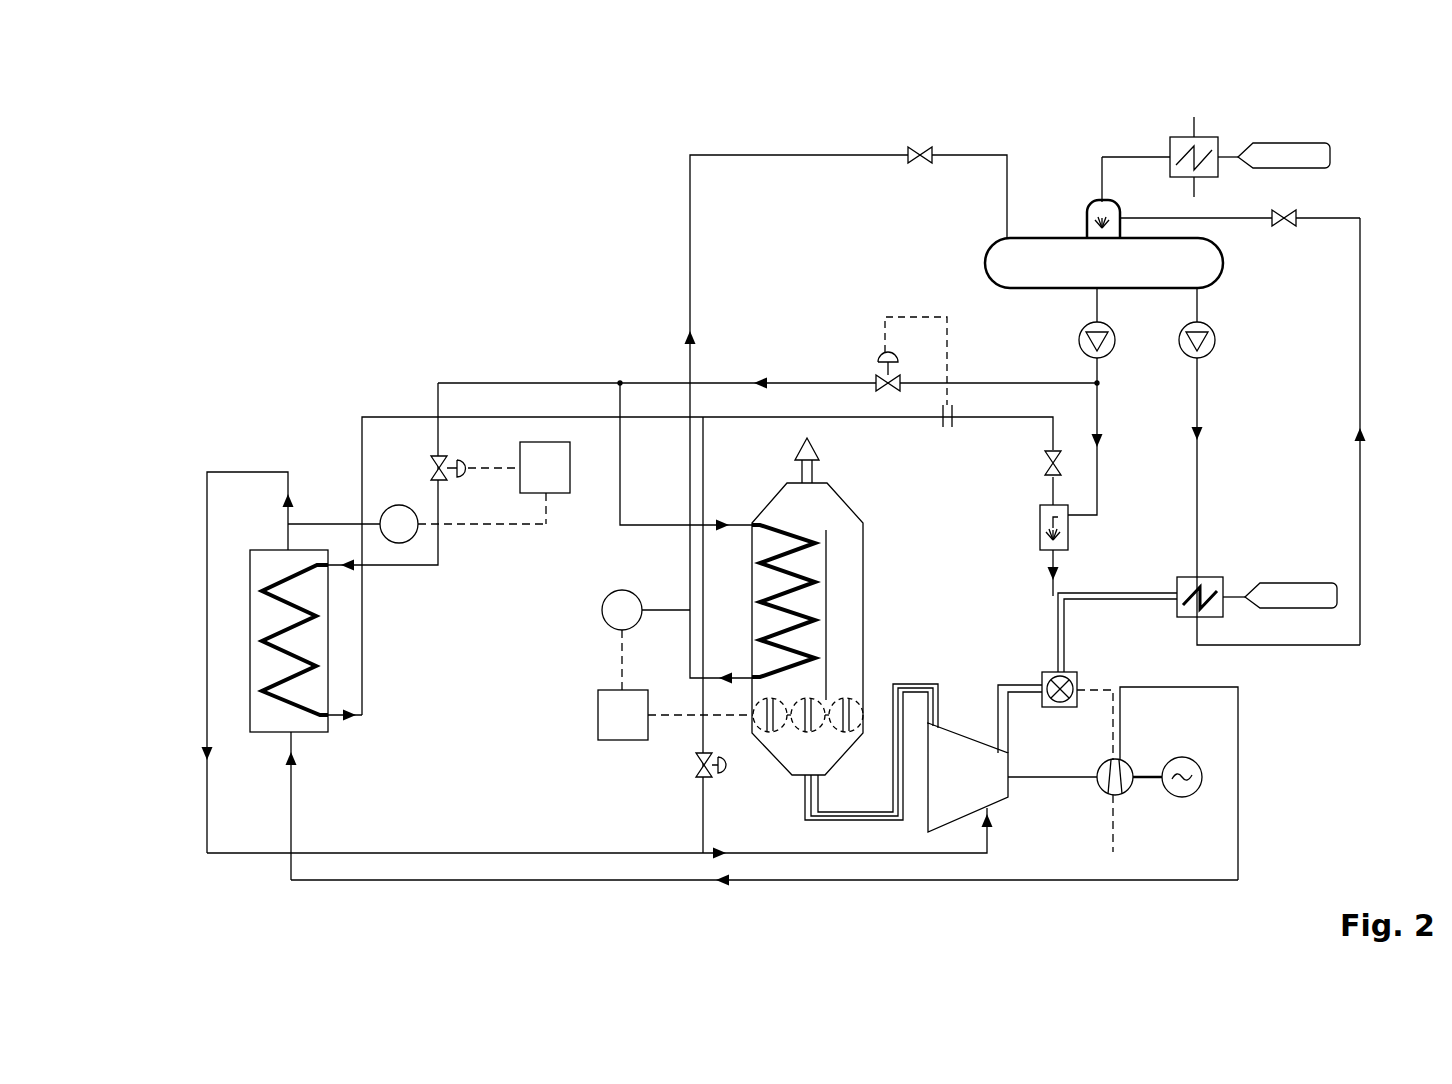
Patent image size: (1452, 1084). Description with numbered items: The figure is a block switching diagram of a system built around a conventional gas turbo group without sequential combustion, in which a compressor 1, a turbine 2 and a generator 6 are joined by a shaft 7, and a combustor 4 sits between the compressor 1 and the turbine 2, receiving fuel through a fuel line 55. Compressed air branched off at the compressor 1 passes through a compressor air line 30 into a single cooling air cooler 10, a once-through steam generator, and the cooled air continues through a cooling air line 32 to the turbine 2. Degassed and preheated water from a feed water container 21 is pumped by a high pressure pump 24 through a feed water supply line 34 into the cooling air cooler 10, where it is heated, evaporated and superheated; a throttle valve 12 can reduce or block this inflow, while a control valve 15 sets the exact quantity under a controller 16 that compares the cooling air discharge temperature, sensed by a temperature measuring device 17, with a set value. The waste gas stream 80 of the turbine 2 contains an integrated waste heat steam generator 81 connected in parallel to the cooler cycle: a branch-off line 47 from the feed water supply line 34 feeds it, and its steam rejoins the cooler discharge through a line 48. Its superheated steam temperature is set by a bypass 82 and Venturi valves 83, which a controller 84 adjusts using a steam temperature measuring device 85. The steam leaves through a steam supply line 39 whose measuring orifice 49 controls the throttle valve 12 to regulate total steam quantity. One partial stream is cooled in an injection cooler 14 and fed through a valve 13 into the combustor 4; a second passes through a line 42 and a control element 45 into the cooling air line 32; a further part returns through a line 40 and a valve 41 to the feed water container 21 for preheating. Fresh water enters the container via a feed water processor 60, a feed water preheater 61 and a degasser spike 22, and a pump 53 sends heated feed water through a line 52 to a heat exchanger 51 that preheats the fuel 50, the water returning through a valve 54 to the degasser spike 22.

The compressor 1 is at (1111, 854).
The turbine 2 is at (960, 785).
The combustor 4 is at (1075, 675).
The generator 6 is at (1182, 797).
The shaft 7 is at (1040, 777).
The cooling air cooler 10 is at (267, 627).
The throttle valve 12 is at (883, 355).
The valve 13 is at (1045, 462).
The injection cooler 14 is at (1040, 532).
The control valve 15 is at (475, 279).
The controller 16 is at (557, 450).
The temperature measuring device 17 is at (407, 543).
The feed water container 21 is at (1043, 255).
The degasser spike 22 is at (1093, 202).
The high pressure pump 24 is at (1276, 431).
The compressor air line 30 is at (467, 880).
The cooling air line 32 is at (380, 853).
The feed water supply line 34 is at (647, 383).
The steam supply line 39 is at (725, 417).
The line 40 is at (832, 155).
The valve 41 is at (920, 147).
The line 42 is at (749, 466).
The control element 45 is at (694, 851).
The branch-off line 47 is at (533, 578).
The line 48 is at (599, 609).
The measuring orifice 49 is at (940, 408).
The fuel 50 is at (1307, 597).
The heat exchanger 51 is at (1307, 565).
The line 52 is at (1197, 468).
The pump 53 is at (1215, 340).
The valve 54 is at (1278, 244).
The fuel line 55 is at (1117, 586).
The feed water processor 60 is at (1297, 157).
The feed water preheater 61 is at (1213, 128).
The waste gas stream 80 is at (857, 820).
The waste heat steam generator 81 is at (838, 563).
The bypass 82 is at (842, 622).
The Venturi valves 83 is at (803, 733).
The controller 84 is at (623, 820).
The steam temperature measuring device 85 is at (614, 770).